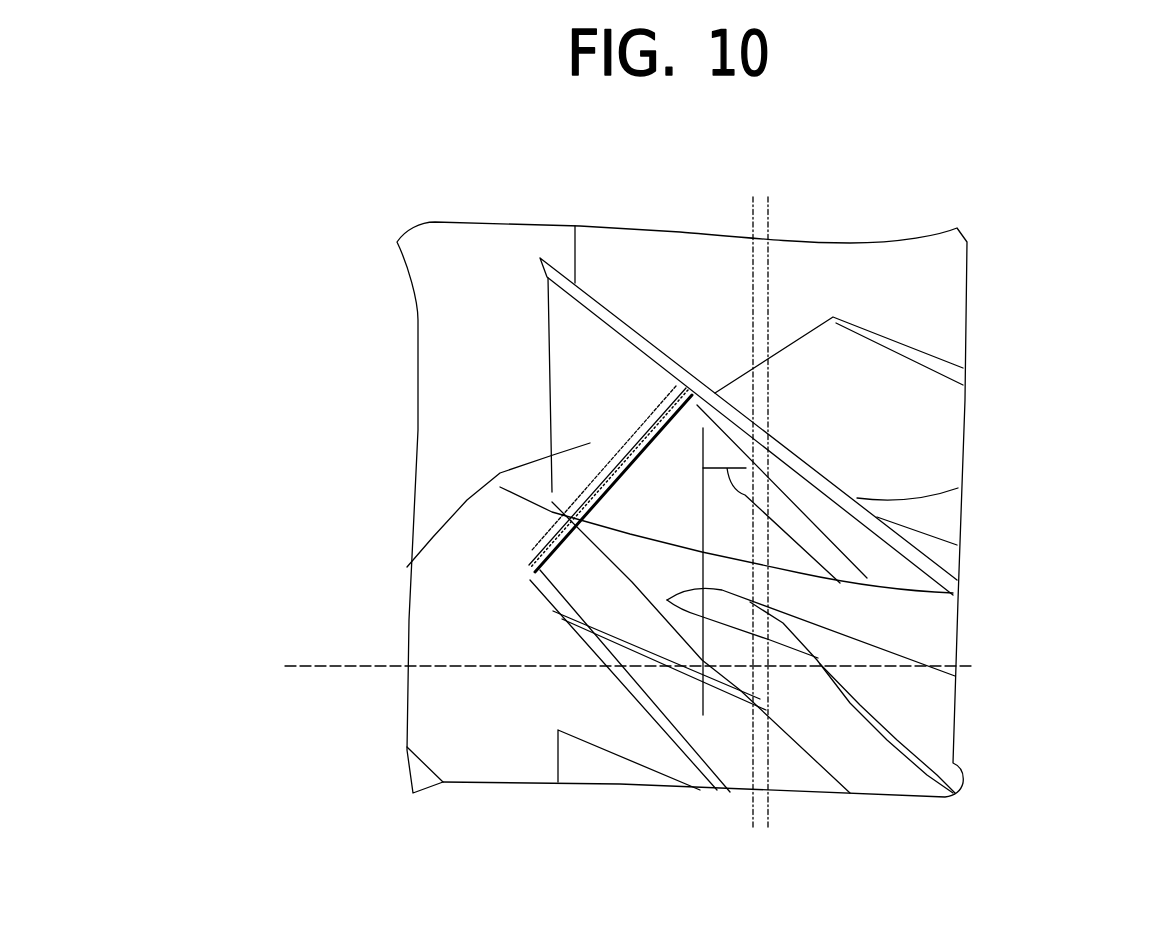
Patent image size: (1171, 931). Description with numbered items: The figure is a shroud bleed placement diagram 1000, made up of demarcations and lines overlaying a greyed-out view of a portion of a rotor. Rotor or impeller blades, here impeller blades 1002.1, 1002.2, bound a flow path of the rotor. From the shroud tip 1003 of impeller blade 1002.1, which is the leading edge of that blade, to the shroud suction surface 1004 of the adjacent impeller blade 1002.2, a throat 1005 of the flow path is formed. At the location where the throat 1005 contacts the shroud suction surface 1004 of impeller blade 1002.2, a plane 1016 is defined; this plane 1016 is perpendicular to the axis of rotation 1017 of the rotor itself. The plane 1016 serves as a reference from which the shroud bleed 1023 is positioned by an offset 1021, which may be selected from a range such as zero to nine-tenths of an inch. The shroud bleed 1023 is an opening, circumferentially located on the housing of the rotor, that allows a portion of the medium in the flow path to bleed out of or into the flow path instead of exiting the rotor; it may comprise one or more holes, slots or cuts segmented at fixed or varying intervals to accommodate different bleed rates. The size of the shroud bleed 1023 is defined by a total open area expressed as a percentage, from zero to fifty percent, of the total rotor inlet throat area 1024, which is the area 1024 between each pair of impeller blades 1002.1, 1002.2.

The shroud bleed placement diagram 1000 is at (1110, 162).
The impeller blade 1002.1 is at (562, 615).
The impeller blade 1002.2 is at (877, 517).
The shroud tip 1003 is at (510, 558).
The shroud suction surface 1004 is at (670, 397).
The throat 1005 is at (500, 487).
The plane 1016 is at (701, 716).
The axis of rotation 1017 is at (340, 682).
The offset 1021 is at (811, 690).
The shroud bleed 1023 is at (765, 176).
The total rotor inlet throat area 1024 is at (543, 486).